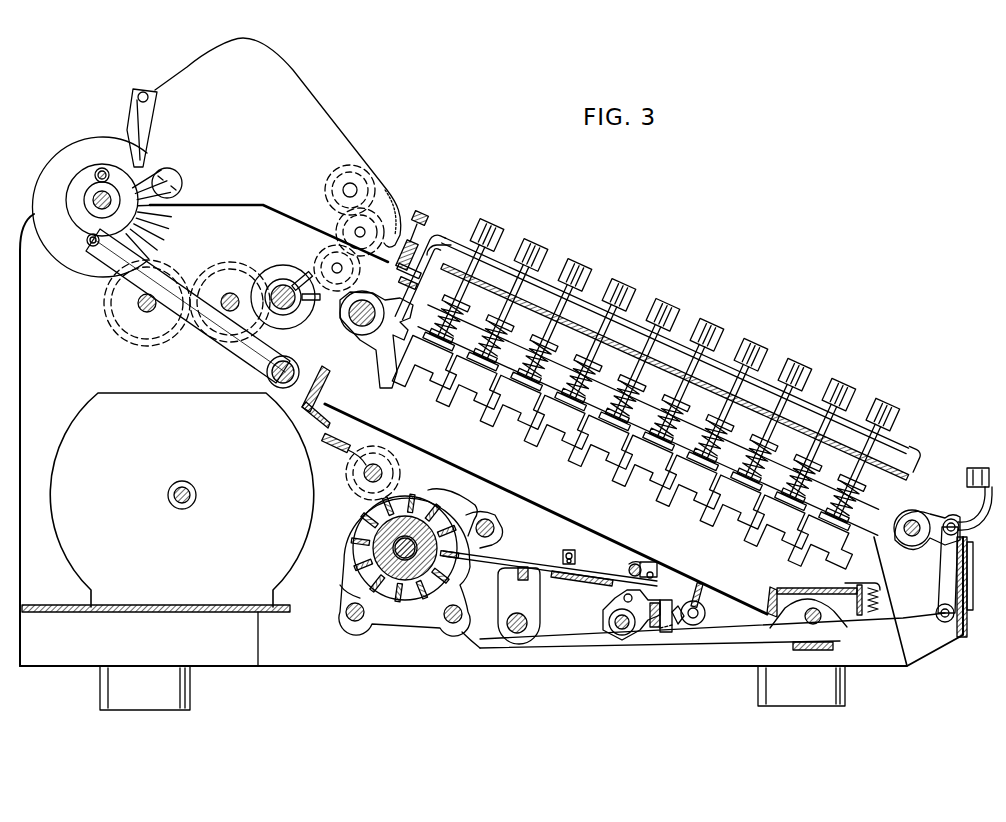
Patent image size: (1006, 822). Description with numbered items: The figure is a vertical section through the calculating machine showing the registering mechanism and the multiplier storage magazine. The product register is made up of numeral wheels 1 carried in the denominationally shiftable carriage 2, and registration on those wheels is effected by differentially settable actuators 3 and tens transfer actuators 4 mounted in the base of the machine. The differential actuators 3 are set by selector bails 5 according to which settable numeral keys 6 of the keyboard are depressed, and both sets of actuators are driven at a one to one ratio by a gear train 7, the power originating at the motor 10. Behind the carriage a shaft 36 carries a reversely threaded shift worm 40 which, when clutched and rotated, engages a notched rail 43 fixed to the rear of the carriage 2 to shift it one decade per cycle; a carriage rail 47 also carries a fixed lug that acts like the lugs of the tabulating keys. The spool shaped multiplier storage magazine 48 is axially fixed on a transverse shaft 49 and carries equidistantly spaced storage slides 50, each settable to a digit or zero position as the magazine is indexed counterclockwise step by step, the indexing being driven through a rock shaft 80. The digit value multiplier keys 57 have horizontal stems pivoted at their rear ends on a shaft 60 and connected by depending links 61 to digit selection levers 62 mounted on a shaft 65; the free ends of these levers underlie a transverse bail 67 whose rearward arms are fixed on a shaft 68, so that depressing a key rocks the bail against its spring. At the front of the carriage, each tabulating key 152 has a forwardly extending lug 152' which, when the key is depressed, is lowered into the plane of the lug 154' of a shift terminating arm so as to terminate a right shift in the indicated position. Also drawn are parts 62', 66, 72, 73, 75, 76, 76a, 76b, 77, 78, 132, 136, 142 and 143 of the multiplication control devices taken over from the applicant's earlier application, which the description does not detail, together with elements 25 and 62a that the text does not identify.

The numeral wheels 1 is at (378, 186).
The carriage 2 is at (333, 118).
The differentially settable actuators 3 is at (400, 322).
The tens transfer actuators 4 is at (290, 280).
The selector bails 5 is at (528, 494).
The settable numeral keys 6 is at (838, 388).
The gear train 7 is at (195, 290).
The motor 10 is at (88, 425).
The pinion 25 is at (240, 294).
The shaft 36 is at (94, 196).
The shift worm 40 is at (100, 150).
The notched rail 43 is at (150, 128).
The carriage rail 47 is at (418, 244).
The multiplier storage magazine 48 is at (345, 568).
The shaft 49 is at (352, 590).
The storage slides 50 is at (420, 510).
The multiplier keys 57 is at (978, 470).
The shaft 60 is at (917, 518).
The link connection 61 is at (968, 580).
The digit selection levers 62 is at (703, 639).
The lug 62a is at (870, 570).
The multiplication control part 62' is at (655, 659).
The shaft 65 is at (820, 625).
The multiplication control part 66 is at (651, 572).
The bail 67 is at (660, 625).
The shaft 68 is at (616, 630).
The multiplication control part 72 is at (945, 575).
The multiplication control part 73 is at (693, 600).
The multiplication control part 75 is at (678, 625).
The multiplication control part 76 is at (492, 562).
The multiplication control part 76a is at (575, 550).
The multiplication control part 76b is at (518, 573).
The multiplication control part 77 is at (592, 584).
The multiplication control part 78 is at (503, 600).
The rock shaft 80 is at (528, 630).
The multiplication control part 132 is at (440, 600).
The multiplication control part 136 is at (350, 523).
The multiplication control part 142 is at (640, 560).
The multiplication control part 143 is at (576, 558).
The tabulating keys 152 is at (439, 216).
The lug 152' is at (467, 228).
The lug 154' is at (389, 283).